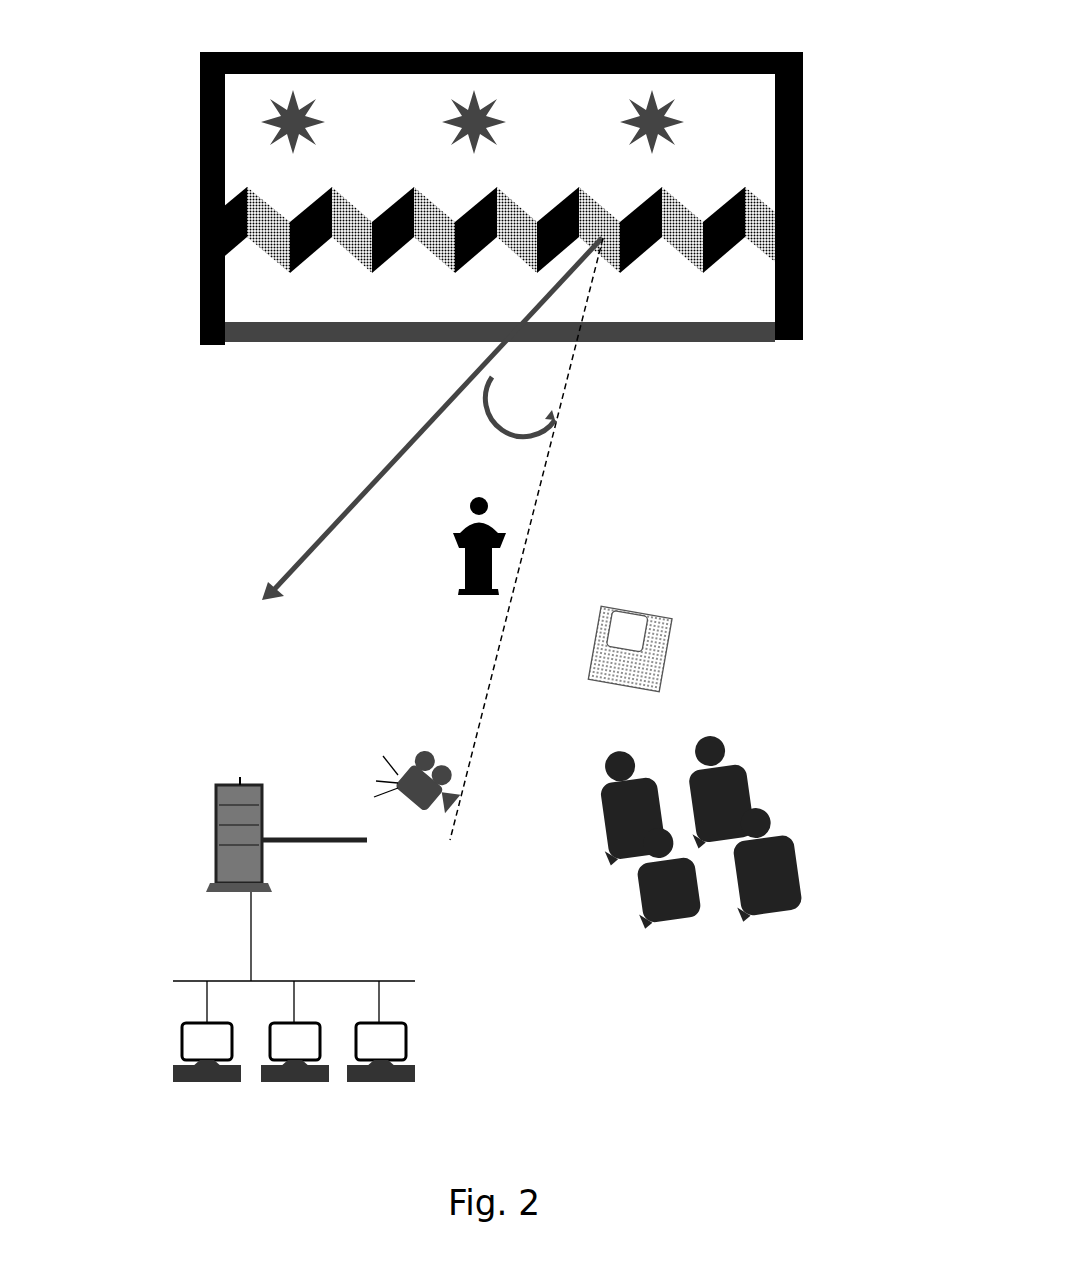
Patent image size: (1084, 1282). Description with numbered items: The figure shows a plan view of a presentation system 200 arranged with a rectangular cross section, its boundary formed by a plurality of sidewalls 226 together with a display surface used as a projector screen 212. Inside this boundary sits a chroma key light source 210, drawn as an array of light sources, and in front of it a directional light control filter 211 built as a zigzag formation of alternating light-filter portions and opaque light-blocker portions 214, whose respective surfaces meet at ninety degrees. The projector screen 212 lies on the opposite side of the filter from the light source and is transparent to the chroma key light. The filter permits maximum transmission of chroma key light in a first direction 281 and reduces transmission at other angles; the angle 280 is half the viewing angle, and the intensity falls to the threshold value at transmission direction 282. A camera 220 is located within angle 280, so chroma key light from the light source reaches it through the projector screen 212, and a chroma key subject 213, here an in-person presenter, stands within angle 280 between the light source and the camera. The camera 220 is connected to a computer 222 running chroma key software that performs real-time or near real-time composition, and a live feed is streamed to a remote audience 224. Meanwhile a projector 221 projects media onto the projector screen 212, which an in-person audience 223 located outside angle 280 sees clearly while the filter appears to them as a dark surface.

The presentation system 200 is at (501, 172).
The sidewalls 226 is at (199, 150).
The chroma key light source 210 is at (470, 123).
The directional light control filter 211 is at (688, 190).
The light-blocker portions 214 is at (747, 238).
The projector screen 212 is at (670, 338).
The first direction 281 is at (430, 430).
The angle 280 is at (508, 398).
The chroma key subject 213 is at (497, 560).
The transmission direction 282 is at (495, 648).
The projector 221 is at (650, 645).
The camera 220 is at (398, 752).
The in-person audience 223 is at (753, 787).
The computer 222 is at (216, 852).
The remote audience 224 is at (183, 1043).